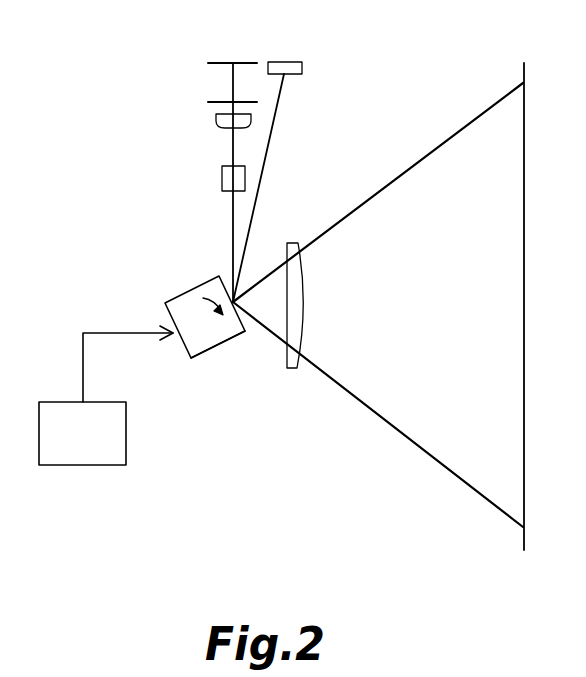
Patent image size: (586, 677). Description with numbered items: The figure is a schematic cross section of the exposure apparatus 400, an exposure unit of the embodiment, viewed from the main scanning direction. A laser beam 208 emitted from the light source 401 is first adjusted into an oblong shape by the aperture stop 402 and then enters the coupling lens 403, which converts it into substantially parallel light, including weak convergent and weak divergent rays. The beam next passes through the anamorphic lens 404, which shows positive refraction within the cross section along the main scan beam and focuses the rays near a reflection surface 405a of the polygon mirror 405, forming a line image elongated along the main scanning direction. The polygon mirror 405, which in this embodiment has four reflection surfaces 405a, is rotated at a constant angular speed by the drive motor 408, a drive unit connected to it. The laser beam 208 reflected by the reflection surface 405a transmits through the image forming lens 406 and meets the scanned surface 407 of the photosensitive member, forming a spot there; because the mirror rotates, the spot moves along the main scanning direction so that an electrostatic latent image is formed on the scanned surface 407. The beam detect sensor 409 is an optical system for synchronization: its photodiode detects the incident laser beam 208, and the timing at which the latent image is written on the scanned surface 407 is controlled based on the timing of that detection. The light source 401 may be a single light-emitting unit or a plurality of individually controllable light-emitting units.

The exposure apparatus 400 is at (207, 504).
The light source 401 is at (226, 53).
The aperture stop 402 is at (218, 100).
The coupling lens 403 is at (216, 118).
The anamorphic lens 404 is at (222, 180).
The polygon mirror 405 is at (185, 287).
The reflection surface 405a is at (230, 338).
The image forming lens 406 is at (307, 290).
The scanned surface 407 is at (523, 247).
The drive motor 408 is at (77, 466).
The beam detect sensor 409 is at (303, 62).
The laser beam 208 is at (230, 245).